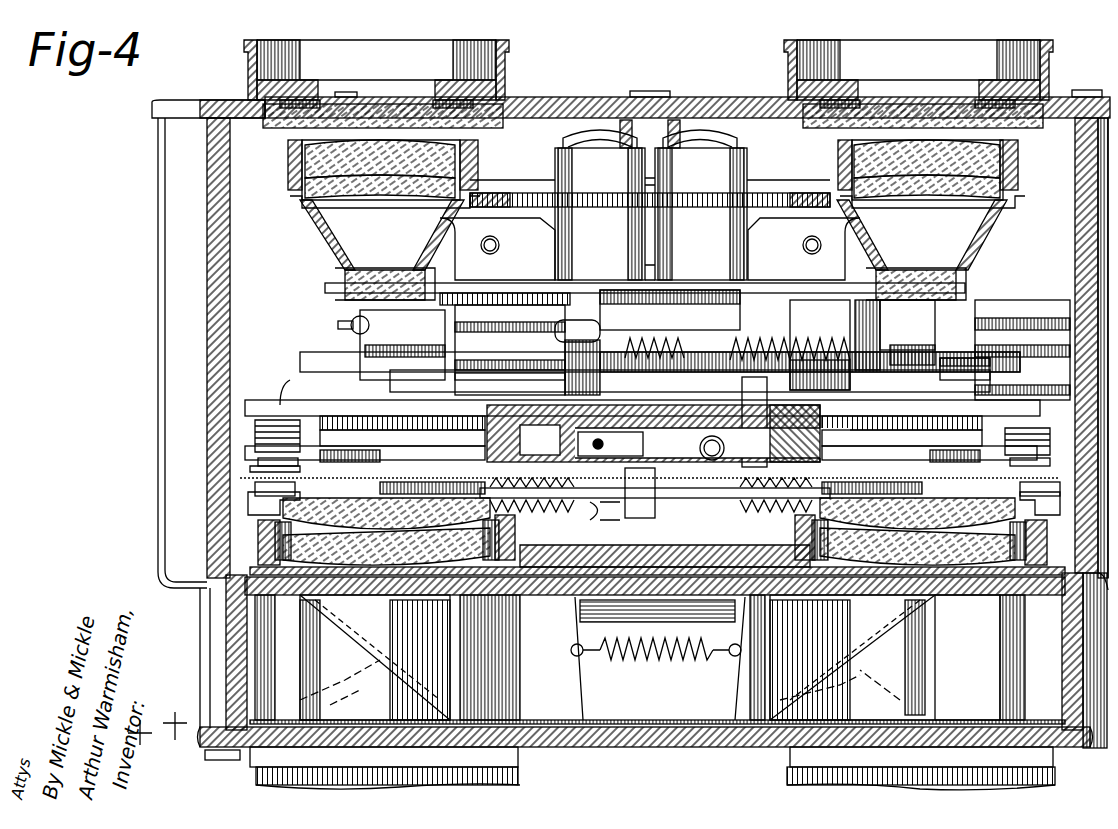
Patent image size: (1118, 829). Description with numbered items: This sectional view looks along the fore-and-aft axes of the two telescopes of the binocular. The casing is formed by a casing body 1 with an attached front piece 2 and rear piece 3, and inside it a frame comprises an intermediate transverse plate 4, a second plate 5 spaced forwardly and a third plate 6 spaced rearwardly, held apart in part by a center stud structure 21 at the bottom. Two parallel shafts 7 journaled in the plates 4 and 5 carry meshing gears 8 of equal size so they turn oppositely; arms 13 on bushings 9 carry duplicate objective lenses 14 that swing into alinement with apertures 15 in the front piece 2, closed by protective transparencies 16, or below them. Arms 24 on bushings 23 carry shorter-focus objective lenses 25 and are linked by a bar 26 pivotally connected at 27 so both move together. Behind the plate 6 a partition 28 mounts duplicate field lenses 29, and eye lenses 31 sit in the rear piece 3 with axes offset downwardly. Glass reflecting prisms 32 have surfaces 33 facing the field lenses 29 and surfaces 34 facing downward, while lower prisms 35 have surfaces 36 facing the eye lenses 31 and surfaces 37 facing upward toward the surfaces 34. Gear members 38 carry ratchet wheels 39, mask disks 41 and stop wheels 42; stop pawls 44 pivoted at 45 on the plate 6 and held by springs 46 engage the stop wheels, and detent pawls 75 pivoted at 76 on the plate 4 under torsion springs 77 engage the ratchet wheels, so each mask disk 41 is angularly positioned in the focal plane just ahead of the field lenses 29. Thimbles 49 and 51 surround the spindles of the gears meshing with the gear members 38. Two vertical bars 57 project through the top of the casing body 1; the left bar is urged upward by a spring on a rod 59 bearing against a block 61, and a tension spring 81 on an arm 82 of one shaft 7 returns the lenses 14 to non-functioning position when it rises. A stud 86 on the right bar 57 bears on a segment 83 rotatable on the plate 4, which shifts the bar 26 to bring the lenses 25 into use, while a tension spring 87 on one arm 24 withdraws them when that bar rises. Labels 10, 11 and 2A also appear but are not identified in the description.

The casing body 1 is at (165, 300).
The front piece 2 is at (165, 108).
The rear piece 3 is at (648, 750).
The intermediate transverse vertically disposed plate 4 is at (335, 390).
The second transverse vertically disposed plate 5 is at (770, 286).
The third transverse vertically disposed plate 6 is at (605, 520).
The shafts 7 is at (690, 340).
The meshing gears 8 is at (665, 312).
The bushings 9 is at (556, 165).
The axis direction 10 is at (145, 738).
The cap / axis direction 11 is at (592, 135).
The arms 13 is at (488, 196).
The objective lenses 14 is at (296, 158).
The apertures 15 is at (498, 108).
The transparencies 16 is at (405, 113).
The center stud structure 21 is at (672, 490).
The bushings 23 is at (385, 372).
The arms 24 is at (1000, 368).
The objective lenses 25 is at (500, 305).
The bar 26 is at (830, 378).
The pivotal connections 27 is at (920, 332).
The partition 28 is at (685, 556).
The field lenses 29 is at (505, 530).
The eye lenses 31 is at (520, 775).
The glass reflecting prisms 32 is at (440, 690).
The reflecting surfaces 33 is at (405, 645).
The reflecting surfaces 34 is at (560, 695).
The glass reflecting prisms 35 is at (559, 680).
The reflecting surfaces 36 is at (352, 699).
The reflecting surfaces 37 is at (901, 685).
The gear members 38 is at (420, 424).
The ratchet wheels 39 is at (651, 453).
The mask disks 41 is at (641, 461).
The stop wheels 42 is at (661, 463).
The stop pawls 44 is at (250, 500).
The pivots 45 is at (258, 488).
The springs 46 is at (762, 514).
The thimbles 49 is at (540, 387).
The thimbles 51 is at (480, 290).
The vertical bars 57 is at (800, 413).
The vertical rod 59 is at (610, 441).
The block 61 is at (698, 444).
The detent pawls 75 is at (661, 447).
The pivots 76 is at (651, 461).
The torsion springs 77 is at (290, 405).
The tension spring 81 is at (352, 324).
The arm 82 is at (579, 340).
The segment 83 is at (768, 390).
The stud 86 is at (750, 388).
The tension spring 87 is at (760, 322).
The ring 2A is at (372, 352).